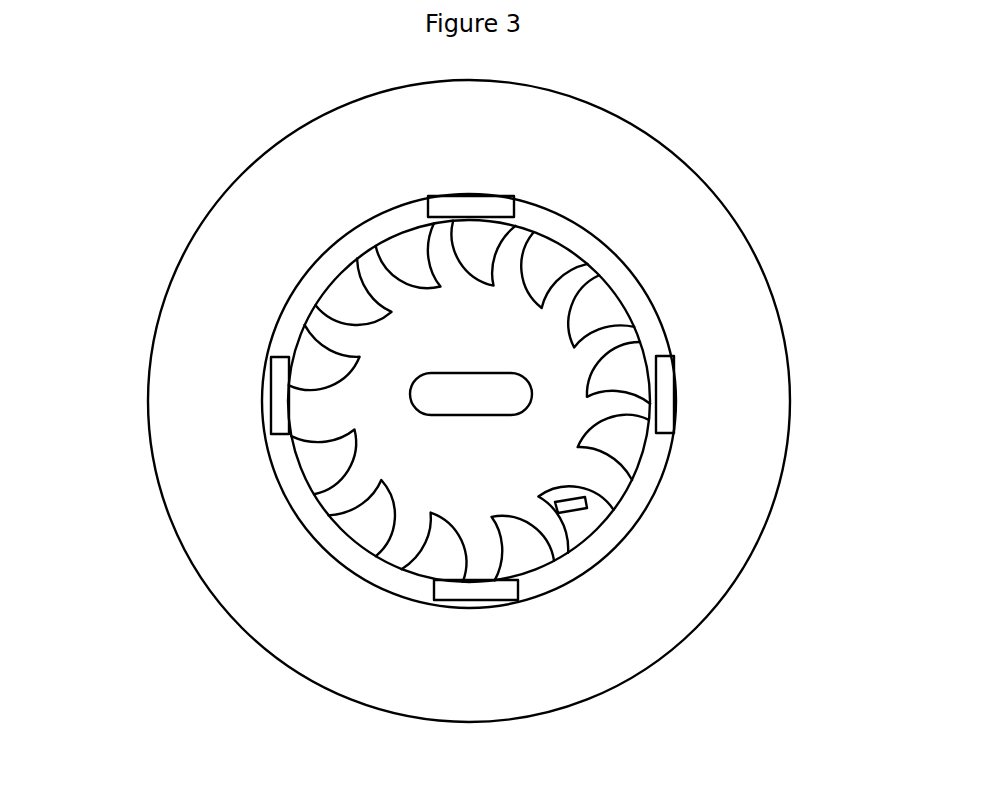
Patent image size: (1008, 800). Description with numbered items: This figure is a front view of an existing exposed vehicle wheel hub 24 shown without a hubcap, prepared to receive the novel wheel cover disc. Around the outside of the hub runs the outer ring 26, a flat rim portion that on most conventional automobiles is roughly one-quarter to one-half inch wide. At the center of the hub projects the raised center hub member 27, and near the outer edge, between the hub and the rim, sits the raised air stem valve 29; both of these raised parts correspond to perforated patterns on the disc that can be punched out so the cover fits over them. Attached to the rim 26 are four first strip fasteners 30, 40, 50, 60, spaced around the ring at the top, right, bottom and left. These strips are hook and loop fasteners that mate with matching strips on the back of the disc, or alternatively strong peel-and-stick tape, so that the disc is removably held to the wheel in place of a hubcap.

The vehicle wheel hub 24 is at (617, 247).
The outer ring 26 is at (657, 468).
The raised center hub member 27 is at (412, 406).
The raised air stem valve 29 is at (578, 508).
The first strip fastener 30 is at (470, 200).
The first strip fastener 40 is at (676, 400).
The first strip fastener 50 is at (472, 598).
The first strip fastener 60 is at (271, 398).